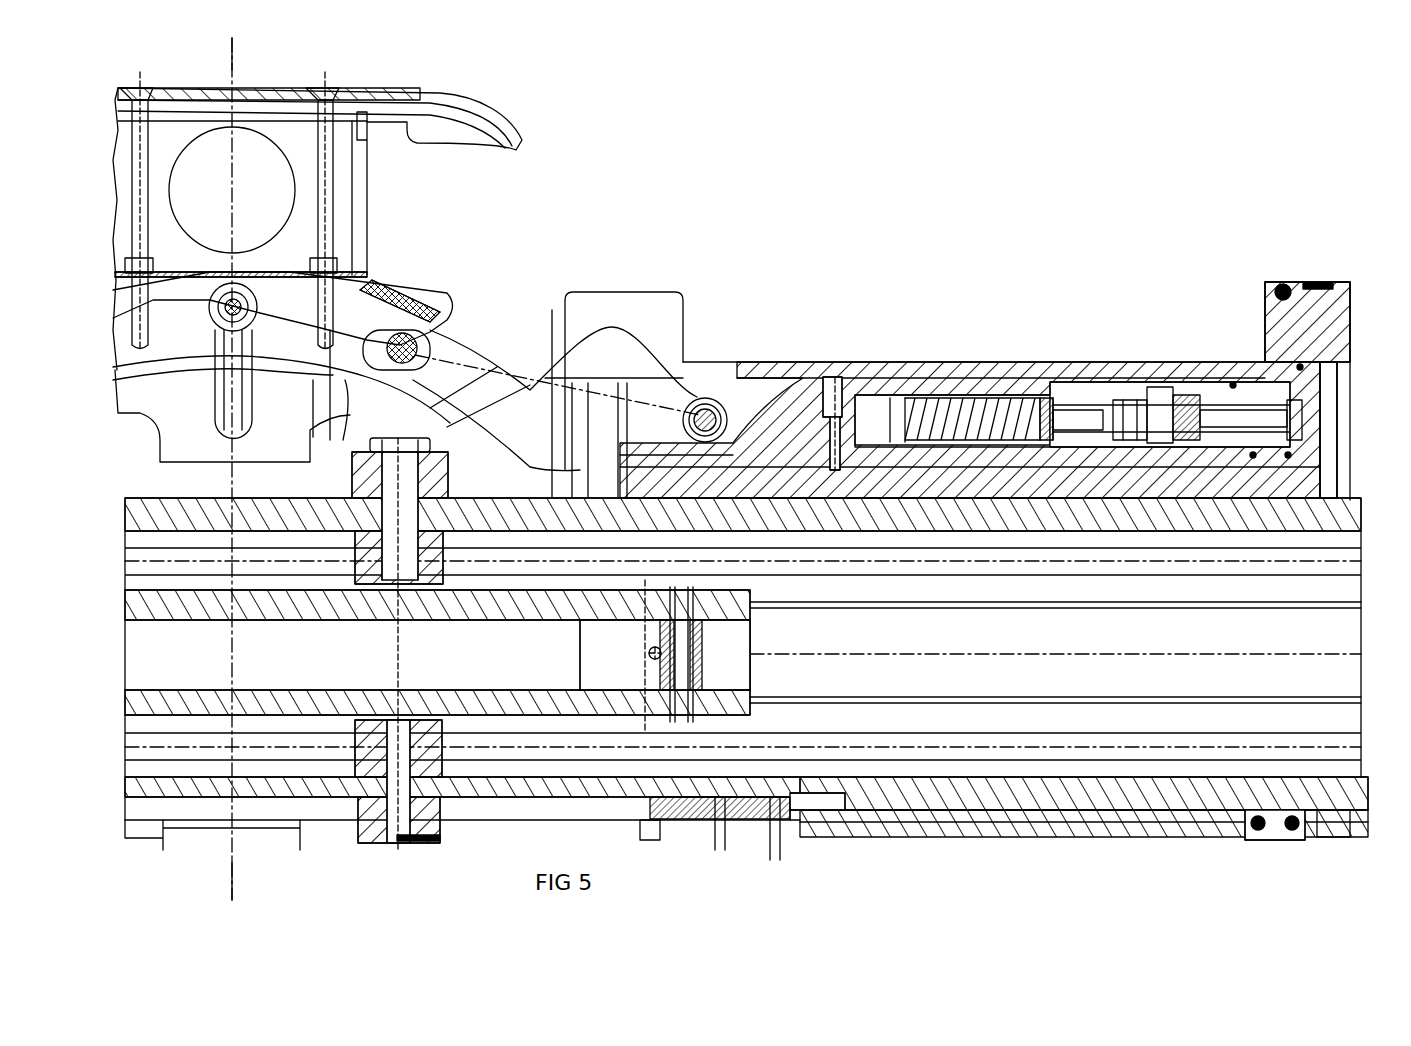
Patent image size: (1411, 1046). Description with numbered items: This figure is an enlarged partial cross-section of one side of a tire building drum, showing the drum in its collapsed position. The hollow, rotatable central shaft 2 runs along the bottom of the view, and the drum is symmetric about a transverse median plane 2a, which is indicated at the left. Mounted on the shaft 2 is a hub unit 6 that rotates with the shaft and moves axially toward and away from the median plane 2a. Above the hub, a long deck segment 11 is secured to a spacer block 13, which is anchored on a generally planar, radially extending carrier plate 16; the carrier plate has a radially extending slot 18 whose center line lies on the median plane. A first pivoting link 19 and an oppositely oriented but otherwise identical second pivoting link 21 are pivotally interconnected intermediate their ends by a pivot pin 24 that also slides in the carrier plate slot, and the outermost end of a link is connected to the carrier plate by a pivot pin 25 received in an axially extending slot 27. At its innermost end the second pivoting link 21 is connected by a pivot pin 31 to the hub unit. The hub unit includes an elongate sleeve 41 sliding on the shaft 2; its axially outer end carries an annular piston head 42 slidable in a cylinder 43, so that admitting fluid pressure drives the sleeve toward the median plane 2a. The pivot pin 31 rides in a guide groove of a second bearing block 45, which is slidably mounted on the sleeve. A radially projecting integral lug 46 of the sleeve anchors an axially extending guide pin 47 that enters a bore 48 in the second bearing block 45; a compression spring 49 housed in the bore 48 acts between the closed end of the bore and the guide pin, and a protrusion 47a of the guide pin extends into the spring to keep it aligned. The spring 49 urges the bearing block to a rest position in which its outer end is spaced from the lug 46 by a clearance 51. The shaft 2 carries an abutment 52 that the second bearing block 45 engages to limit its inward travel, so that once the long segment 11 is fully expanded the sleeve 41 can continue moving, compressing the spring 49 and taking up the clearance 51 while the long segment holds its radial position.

The central shaft 2 is at (1340, 520).
The transverse median plane 2a is at (205, 880).
The second hub unit 6 is at (993, 335).
The deck segment 11 is at (247, 96).
The spacer block 13 is at (355, 182).
The carrier plate 16 is at (375, 283).
The radially extending slot 18 is at (240, 398).
The first pivoting link 19 is at (347, 393).
The second pivoting link 21 is at (515, 335).
The pivot pin 24 is at (150, 300).
The pivot pin 25 is at (420, 335).
The axially extending slot 27 is at (440, 328).
The pivot pin 31 is at (702, 397).
The sleeve 41 is at (1180, 395).
The annular piston head 42 is at (1300, 305).
The cylinder 43 is at (1337, 392).
The second bearing block 45 is at (800, 390).
The lug 46 is at (1213, 385).
The guide pin 47 is at (1105, 410).
The protrusion 47a is at (1050, 398).
The bore 48 is at (965, 385).
The compression spring 49 is at (938, 398).
The clearance 51 is at (1130, 400).
The abutment 52 is at (443, 478).